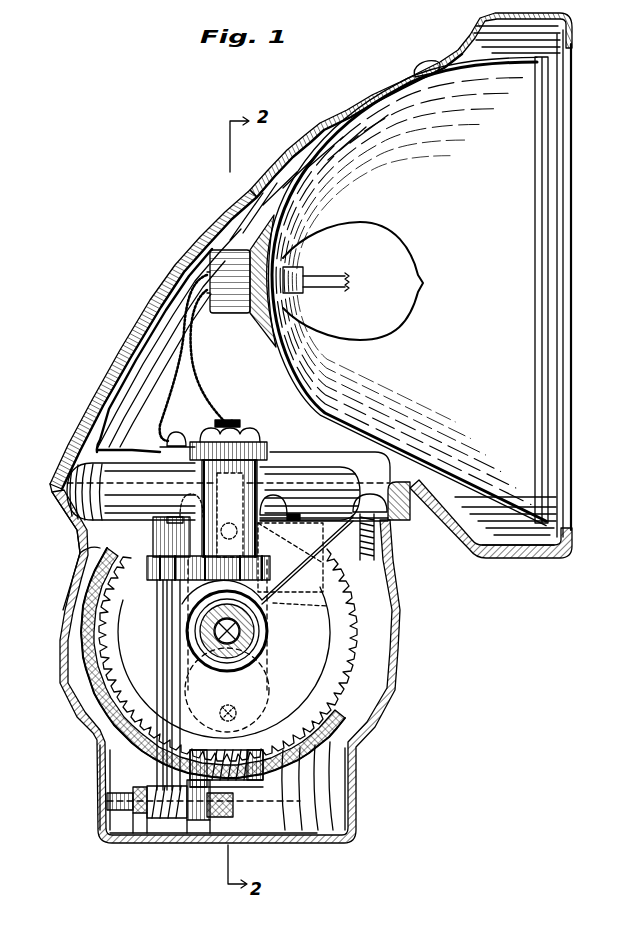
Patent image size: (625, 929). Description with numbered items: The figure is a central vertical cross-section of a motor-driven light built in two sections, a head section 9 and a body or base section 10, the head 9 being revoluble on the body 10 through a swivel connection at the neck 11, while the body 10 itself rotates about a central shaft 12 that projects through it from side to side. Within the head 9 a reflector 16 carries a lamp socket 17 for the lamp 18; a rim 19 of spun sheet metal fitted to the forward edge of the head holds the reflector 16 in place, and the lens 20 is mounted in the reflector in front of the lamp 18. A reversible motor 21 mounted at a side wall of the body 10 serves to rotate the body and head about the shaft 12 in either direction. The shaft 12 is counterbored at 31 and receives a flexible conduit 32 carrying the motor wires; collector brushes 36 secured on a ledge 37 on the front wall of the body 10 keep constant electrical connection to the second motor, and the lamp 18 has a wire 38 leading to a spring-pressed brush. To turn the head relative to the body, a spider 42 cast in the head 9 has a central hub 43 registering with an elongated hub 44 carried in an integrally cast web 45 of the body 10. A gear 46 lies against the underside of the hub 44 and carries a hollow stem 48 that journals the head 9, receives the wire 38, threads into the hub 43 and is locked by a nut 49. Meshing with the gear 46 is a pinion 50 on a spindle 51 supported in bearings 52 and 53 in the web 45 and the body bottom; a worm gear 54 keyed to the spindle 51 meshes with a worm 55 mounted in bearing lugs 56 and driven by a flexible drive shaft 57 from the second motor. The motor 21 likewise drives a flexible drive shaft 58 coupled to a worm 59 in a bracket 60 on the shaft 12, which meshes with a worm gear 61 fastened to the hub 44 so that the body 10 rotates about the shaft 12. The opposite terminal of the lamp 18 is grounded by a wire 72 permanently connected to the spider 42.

The head section 9 is at (134, 340).
The body or base section 10 is at (398, 653).
The neck 11 is at (48, 484).
The central shaft 12 is at (262, 627).
The reflector 16 is at (330, 393).
The lamp socket 17 is at (233, 318).
The lamp 18 is at (395, 247).
The rim 19 is at (515, 560).
The lens 20 is at (542, 333).
The reversible motor 21 is at (283, 500).
The counterbore 31 is at (255, 640).
The flexible conduit 32 is at (222, 668).
The collector brushes 36 is at (337, 548).
The ledge 37 is at (380, 530).
The lamp wire 38 is at (217, 410).
The spider 42 is at (300, 463).
The central hub 43 is at (260, 442).
The elongated hub 44 is at (222, 547).
The web 45 is at (93, 540).
The gear 46 is at (157, 613).
The hollow stem 48 is at (238, 420).
The nut 49 is at (180, 432).
The pinion 50 is at (207, 580).
The spindle 51 is at (167, 640).
The bearing 52 is at (160, 525).
The bearing 53 is at (160, 827).
The worm gear 54 is at (107, 807).
The worm 55 is at (167, 818).
The bearing lugs 56 is at (197, 820).
The flexible drive shaft 57 is at (283, 787).
The flexible drive shaft 58 is at (82, 660).
The worm 59 is at (233, 748).
The bracket 60 is at (262, 768).
The worm gear 61 is at (337, 670).
The ground wire 72 is at (167, 397).